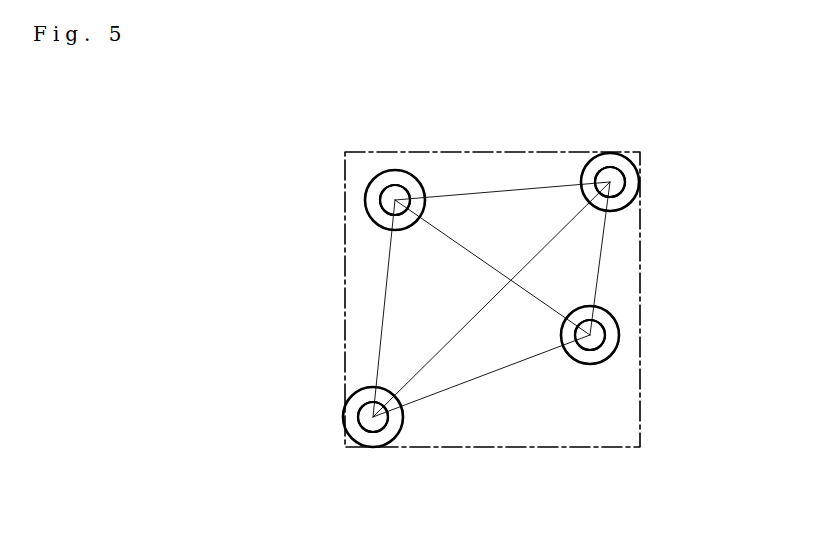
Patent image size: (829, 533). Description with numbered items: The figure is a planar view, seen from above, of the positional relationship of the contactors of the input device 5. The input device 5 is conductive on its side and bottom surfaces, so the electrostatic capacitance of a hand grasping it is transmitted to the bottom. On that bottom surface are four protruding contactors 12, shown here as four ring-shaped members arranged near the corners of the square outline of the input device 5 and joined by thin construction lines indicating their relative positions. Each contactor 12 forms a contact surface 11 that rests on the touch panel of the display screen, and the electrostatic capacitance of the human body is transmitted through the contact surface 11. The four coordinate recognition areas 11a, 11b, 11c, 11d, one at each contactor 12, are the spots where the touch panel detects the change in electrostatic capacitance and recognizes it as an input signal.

The input device 5 is at (493, 146).
The contact surface 11 is at (378, 218).
The coordinate recognition area 11a is at (380, 193).
The coordinate recognition area 11b is at (350, 399).
The coordinate recognition area 11c is at (605, 334).
The coordinate recognition area 11d is at (625, 181).
The contactor 12 is at (368, 172).